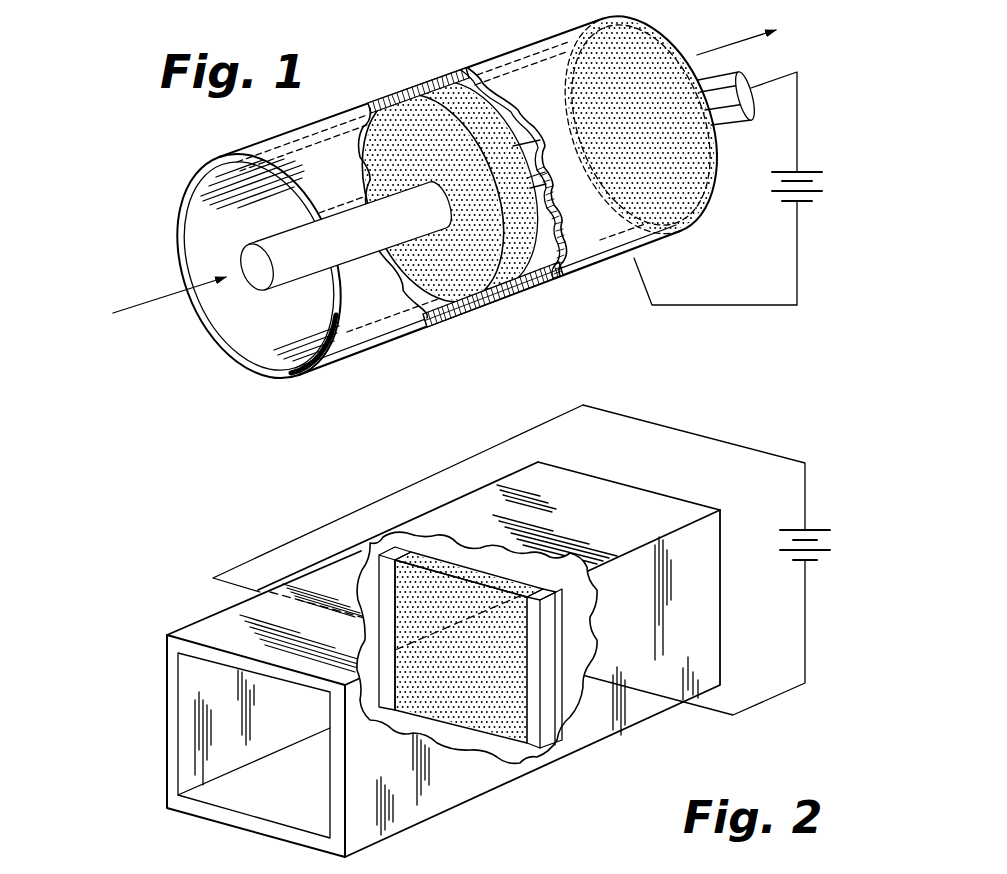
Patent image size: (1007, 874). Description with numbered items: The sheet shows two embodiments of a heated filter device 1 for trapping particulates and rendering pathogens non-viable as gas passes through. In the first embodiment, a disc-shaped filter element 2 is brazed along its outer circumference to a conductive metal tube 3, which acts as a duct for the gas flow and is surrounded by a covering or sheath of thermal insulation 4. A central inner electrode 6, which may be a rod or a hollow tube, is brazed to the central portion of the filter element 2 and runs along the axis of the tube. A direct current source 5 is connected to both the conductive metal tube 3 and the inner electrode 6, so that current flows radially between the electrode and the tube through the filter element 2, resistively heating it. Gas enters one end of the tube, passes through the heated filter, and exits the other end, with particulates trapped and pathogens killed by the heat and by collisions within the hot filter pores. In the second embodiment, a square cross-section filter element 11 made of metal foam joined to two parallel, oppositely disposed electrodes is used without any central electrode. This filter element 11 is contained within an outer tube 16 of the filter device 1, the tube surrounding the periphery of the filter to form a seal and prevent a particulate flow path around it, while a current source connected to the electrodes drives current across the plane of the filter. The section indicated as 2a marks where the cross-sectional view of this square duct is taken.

In FIG. 1, the filter device 1 is at (170, 175).
In FIG. 2, the filter device 1 is at (153, 539).
In FIG. 1, the filter element 2 is at (530, 257).
In FIG. 1, the conductive metal tube 3 is at (247, 346).
In FIG. 1, the thermal insulation 4 is at (283, 378).
In FIG. 1, the direct current source 5 is at (832, 158).
In FIG. 1, the inner electrode 6 is at (248, 258).
In FIG. 2, the filter element 11 is at (453, 744).
In FIG. 2, the outer tube 16 is at (190, 622).
In FIG. 2, the section line 2a is at (142, 645).